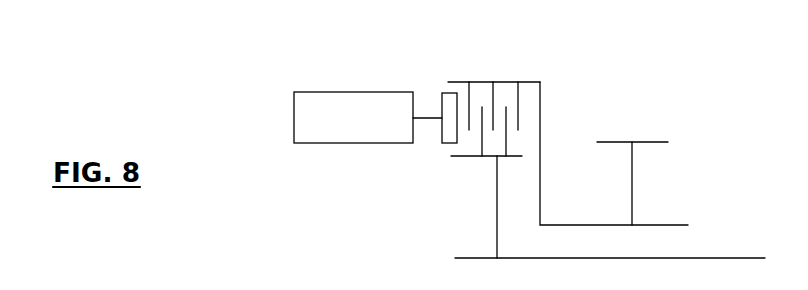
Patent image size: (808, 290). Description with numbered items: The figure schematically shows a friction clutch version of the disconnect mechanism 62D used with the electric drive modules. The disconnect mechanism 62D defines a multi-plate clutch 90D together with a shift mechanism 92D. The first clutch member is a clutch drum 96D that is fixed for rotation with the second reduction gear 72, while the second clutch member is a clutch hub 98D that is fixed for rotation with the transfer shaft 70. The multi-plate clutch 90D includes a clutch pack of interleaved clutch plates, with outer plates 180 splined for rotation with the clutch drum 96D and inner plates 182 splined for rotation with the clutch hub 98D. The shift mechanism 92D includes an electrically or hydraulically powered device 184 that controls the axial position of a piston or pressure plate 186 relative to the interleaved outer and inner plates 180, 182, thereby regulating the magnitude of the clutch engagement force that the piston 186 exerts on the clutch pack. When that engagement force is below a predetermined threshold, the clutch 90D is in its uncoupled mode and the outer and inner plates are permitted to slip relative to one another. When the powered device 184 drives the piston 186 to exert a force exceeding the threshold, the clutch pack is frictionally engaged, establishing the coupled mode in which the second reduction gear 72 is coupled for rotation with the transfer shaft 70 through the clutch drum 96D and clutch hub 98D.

The disconnect mechanism 62D is at (693, 82).
The transfer shaft 70 is at (720, 258).
The second reduction gear 72 is at (617, 142).
The multi-plate clutch 90D is at (570, 104).
The shift mechanism 92D is at (422, 75).
The clutch drum 96D is at (542, 190).
The clutch hub 98D is at (494, 222).
The outer plates 180 is at (493, 95).
The inner plates 182 is at (481, 142).
The powered device 184 is at (330, 100).
The piston 186 is at (451, 99).